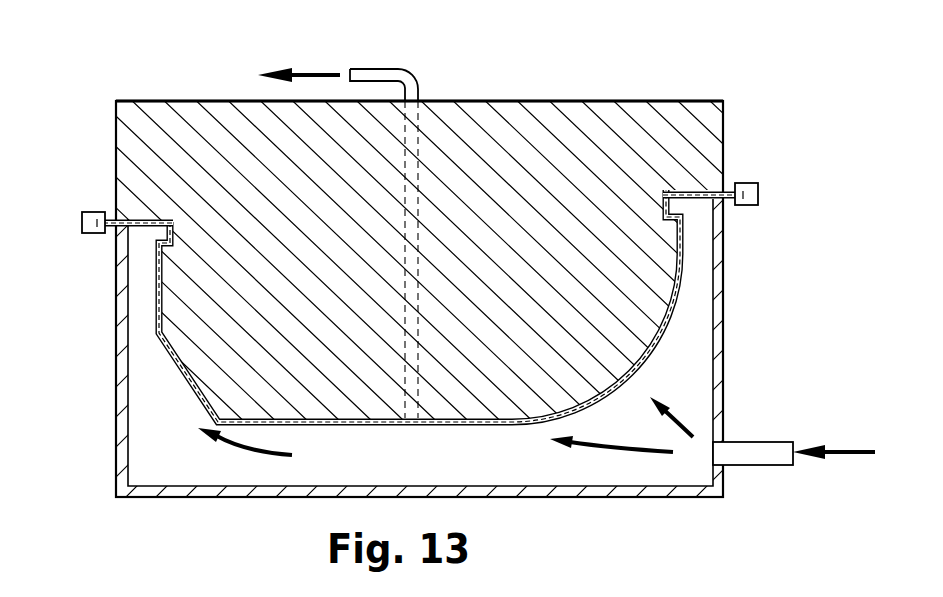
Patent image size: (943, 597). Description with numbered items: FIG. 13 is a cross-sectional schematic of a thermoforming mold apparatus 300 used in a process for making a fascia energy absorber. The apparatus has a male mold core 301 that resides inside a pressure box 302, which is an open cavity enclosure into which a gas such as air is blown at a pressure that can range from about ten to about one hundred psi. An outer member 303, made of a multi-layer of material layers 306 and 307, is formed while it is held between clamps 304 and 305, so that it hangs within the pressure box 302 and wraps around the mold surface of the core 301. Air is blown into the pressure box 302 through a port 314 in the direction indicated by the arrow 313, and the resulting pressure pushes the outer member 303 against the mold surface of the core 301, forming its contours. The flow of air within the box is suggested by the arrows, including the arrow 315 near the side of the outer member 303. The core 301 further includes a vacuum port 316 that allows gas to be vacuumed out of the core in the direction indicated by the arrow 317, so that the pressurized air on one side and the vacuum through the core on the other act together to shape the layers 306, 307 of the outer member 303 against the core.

The thermoforming mold apparatus 300 is at (110, 70).
The male mold core 301 is at (152, 157).
The pressure box 302 is at (123, 382).
The outer member 303 is at (127, 309).
The clamp 304 is at (86, 233).
The clamp 305 is at (758, 192).
The material layer 306 is at (183, 372).
The material layer 307 is at (200, 393).
The direction of air flow 313 is at (843, 455).
The port 314 is at (760, 450).
The flow arrow 315 is at (648, 393).
The vacuum port 316 is at (373, 77).
The direction of vacuum flow 317 is at (308, 72).